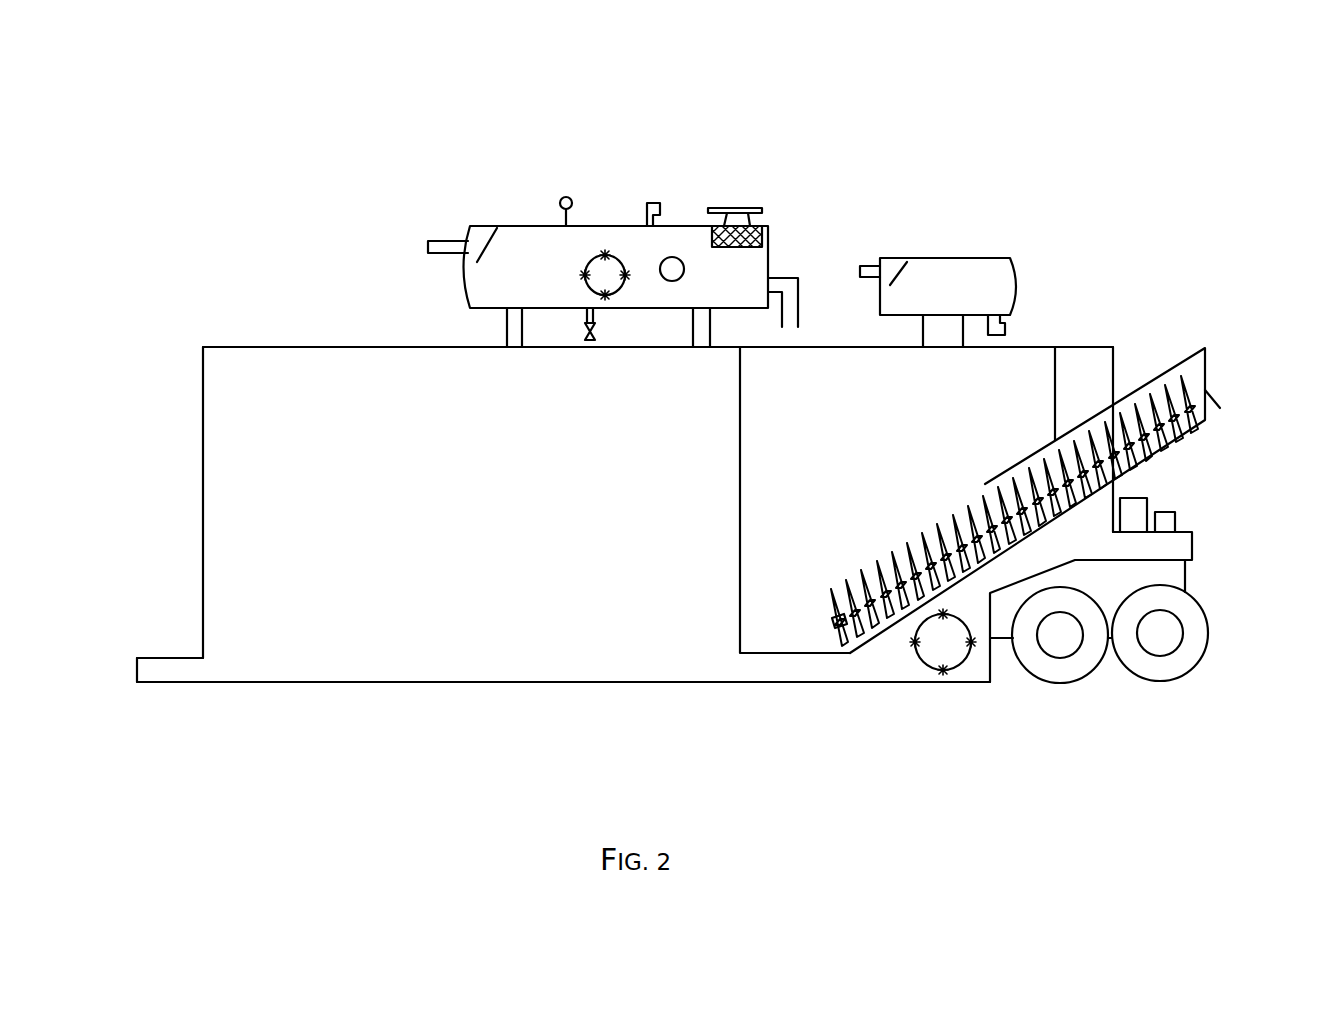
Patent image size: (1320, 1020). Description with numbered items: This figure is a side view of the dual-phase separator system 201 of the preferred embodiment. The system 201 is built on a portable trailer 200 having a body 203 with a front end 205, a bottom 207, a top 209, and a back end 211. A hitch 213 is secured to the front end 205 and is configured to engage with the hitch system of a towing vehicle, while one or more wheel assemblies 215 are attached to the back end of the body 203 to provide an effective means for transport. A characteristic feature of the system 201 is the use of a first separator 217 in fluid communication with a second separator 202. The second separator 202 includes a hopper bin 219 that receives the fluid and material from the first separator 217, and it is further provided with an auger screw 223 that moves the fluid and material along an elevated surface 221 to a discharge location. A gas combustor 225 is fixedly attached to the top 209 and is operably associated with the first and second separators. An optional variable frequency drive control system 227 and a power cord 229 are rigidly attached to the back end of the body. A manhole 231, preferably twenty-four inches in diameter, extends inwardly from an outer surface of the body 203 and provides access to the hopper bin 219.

The portable trailer 200 is at (145, 362).
The dual-phase separator system 201 is at (138, 118).
The second separator 202 is at (706, 677).
The body 203 is at (203, 447).
The front end 205 is at (190, 534).
The bottom 207 is at (524, 697).
The top 209 is at (380, 332).
The back end 211 is at (1128, 348).
The hitch 213 is at (137, 667).
The wheel assemblies 215 is at (1136, 710).
The first separator 217 is at (480, 176).
The hopper bin 219 is at (741, 489).
The elevated surface 221 is at (960, 560).
The auger screw 223 is at (1216, 357).
The gas combustor 225 is at (999, 216).
The variable frequency drive control system 227 is at (1147, 498).
The power cord 229 is at (1175, 520).
The manhole 231 is at (962, 670).